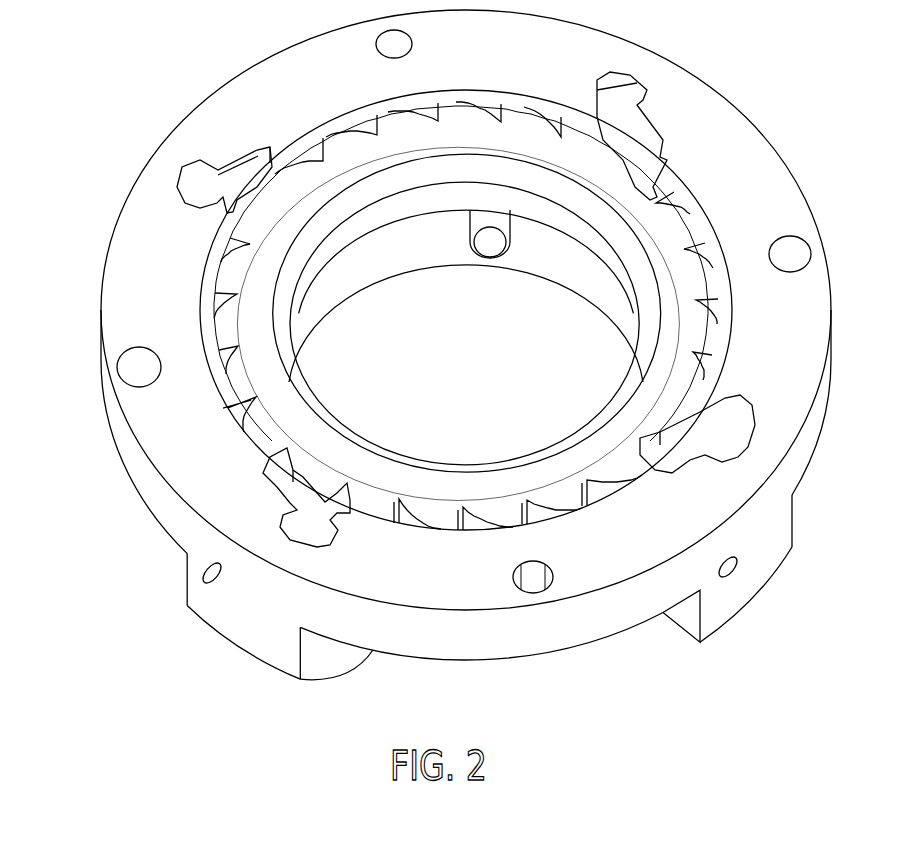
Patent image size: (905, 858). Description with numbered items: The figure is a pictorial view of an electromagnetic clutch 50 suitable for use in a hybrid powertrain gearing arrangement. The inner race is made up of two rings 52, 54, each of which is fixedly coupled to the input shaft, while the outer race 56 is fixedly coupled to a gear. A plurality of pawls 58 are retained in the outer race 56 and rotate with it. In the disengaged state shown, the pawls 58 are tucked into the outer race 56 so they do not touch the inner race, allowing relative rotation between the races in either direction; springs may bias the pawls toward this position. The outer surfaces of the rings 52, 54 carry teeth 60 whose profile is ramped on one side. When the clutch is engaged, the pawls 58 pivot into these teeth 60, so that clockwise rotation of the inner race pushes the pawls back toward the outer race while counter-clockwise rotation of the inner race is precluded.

The electromagnetic clutch 50 is at (92, 452).
The ring 52 is at (510, 188).
The ring 54 is at (585, 255).
The outer race 56 is at (207, 97).
The pawls 58 is at (643, 127).
The teeth 60 is at (553, 518).